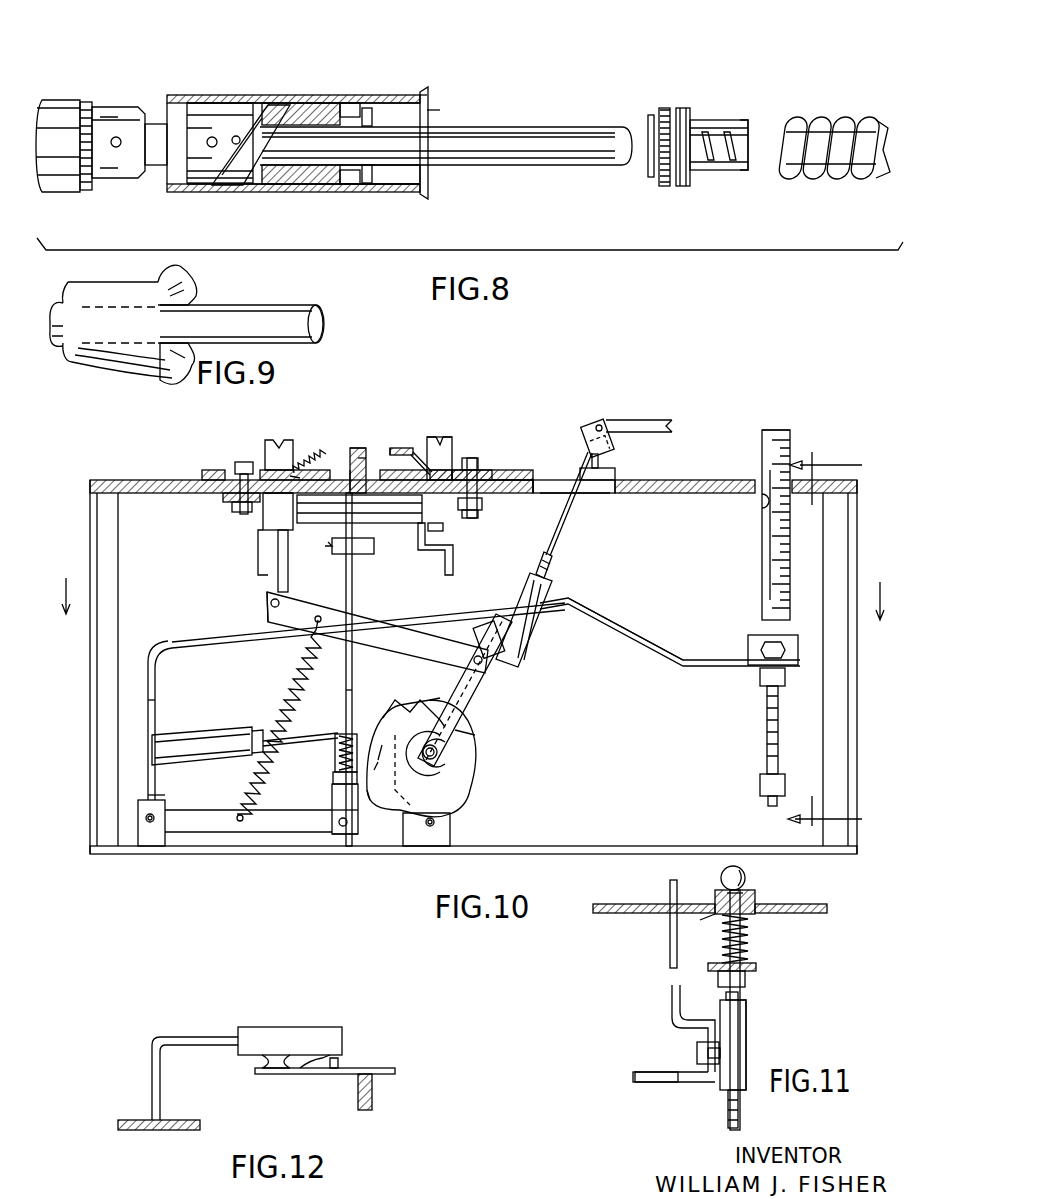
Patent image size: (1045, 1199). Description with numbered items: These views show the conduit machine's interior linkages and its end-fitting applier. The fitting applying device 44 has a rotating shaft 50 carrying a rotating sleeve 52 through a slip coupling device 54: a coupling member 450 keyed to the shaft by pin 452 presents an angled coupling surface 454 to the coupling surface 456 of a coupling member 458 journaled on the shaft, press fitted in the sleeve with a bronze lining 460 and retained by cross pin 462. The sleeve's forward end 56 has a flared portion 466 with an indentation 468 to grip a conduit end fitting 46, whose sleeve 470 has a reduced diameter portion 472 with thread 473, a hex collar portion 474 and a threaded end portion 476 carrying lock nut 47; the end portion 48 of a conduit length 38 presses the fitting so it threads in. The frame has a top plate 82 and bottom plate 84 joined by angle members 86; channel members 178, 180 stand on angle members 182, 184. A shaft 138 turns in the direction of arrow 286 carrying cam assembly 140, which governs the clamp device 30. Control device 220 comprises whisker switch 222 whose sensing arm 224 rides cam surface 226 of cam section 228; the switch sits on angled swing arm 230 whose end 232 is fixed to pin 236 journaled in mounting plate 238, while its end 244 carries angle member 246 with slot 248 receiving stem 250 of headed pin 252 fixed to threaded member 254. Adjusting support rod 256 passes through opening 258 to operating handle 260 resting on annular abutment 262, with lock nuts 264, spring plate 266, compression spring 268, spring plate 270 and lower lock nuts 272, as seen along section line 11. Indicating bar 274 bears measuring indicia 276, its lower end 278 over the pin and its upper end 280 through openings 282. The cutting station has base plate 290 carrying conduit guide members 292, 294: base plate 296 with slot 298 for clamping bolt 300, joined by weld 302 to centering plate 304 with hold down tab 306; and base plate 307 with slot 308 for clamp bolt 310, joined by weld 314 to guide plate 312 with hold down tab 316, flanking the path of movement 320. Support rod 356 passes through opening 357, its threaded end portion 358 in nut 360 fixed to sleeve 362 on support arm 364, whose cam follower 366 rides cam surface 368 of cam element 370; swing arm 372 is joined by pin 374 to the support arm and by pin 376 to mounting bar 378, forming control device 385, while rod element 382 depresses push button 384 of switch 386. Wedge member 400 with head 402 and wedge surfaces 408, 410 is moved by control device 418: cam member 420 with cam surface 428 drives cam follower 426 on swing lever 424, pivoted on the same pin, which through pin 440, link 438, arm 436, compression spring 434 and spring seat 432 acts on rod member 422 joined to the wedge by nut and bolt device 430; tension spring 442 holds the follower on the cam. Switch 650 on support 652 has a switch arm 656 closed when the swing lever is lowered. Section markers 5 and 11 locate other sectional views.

In FIG. 10, the clamp device 30 is at (362, 440).
In FIG. 8, the conduit length 38 is at (878, 178).
In FIG. 8, the power actuated fitting applying device 44 is at (468, 84).
In FIG. 8, the conduit end fitting 46 is at (745, 92).
In FIG. 8, the lock nut 47 is at (675, 92).
In FIG. 8, the end portion of conduit length 48 is at (810, 120).
In FIG. 8, the rotating shaft 50 is at (582, 132).
In FIG. 9, the rotating shaft 50 is at (290, 306).
In FIG. 8, the rotating sleeve 52 is at (352, 96).
In FIG. 8, the slip coupling device 54 is at (266, 100).
In FIG. 8, the flared end of sleeve 56 is at (432, 84).
In FIG. 10, the top plate 82 is at (705, 482).
In FIG. 11, the top plate 82 is at (820, 912).
In FIG. 10, the bottom plate 84 is at (580, 846).
In FIG. 12, the bottom plate 84 is at (185, 1122).
In FIG. 10, the angle members 86 is at (110, 600).
In FIG. 10, the shaft 138 is at (438, 750).
In FIG. 10, the cam assembly 140 is at (485, 740).
In FIG. 10, the channel member 178 is at (462, 470).
In FIG. 10, the channel member 180 is at (272, 442).
In FIG. 10, the angle member 182 is at (450, 560).
In FIG. 10, the angle member 184 is at (262, 572).
In FIG. 10, the control device 220 is at (140, 712).
In FIG. 10, the whisker switch 222 is at (206, 740).
In FIG. 10, the sensing arm 224 is at (322, 735).
In FIG. 10, the cam surface 226 is at (445, 756).
In FIG. 10, the cam section 228 is at (445, 780).
In FIG. 10, the angled swing arm 230 is at (135, 668).
In FIG. 11, the angled swing arm 230 is at (638, 1082).
In FIG. 10, the end of swing arm 232 is at (165, 800).
In FIG. 10, the pin 236 is at (150, 830).
In FIG. 10, the mounting plate 238 is at (158, 830).
In FIG. 10, the end of arm 244 is at (790, 665).
In FIG. 10, the angle member 246 is at (750, 645).
In FIG. 11, the angle member 246 is at (690, 1082).
In FIG. 10, the slot 248 is at (790, 652).
In FIG. 11, the stem 250 is at (740, 1040).
In FIG. 11, the headed pin 252 is at (697, 1055).
In FIG. 11, the hex shaped threaded member 254 is at (750, 1050).
In FIG. 11, the adjusting support rod 256 is at (738, 1118).
In FIG. 11, the opening 258 is at (760, 905).
In FIG. 11, the operating handle 260 is at (745, 880).
In FIG. 11, the annular abutment 262 is at (722, 890).
In FIG. 11, the lock nuts 264 is at (745, 976).
In FIG. 11, the spring plate 266 is at (757, 966).
In FIG. 11, the compression spring 268 is at (745, 940).
In FIG. 11, the spring plate 270 is at (715, 916).
In FIG. 10, the lock nuts 272 is at (760, 786).
In FIG. 10, the indicating bar 274 is at (780, 590).
In FIG. 11, the indicating bar 274 is at (668, 955).
In FIG. 10, the measuring indicia 276 is at (795, 420).
In FIG. 11, the lower end of indicating bar 278 is at (672, 1025).
In FIG. 10, the upper end of indicating bar 280 is at (770, 430).
In FIG. 10, the openings 282 is at (760, 510).
In FIG. 10, the arrow 286 is at (390, 790).
In FIG. 10, the base plate 290 is at (520, 480).
In FIG. 10, the conduit guide member 292 is at (450, 438).
In FIG. 10, the conduit guide member 294 is at (270, 468).
In FIG. 10, the base plate 296 is at (594, 424).
In FIG. 10, the slot 298 is at (488, 472).
In FIG. 10, the clamping bolt 300 is at (488, 495).
In FIG. 10, the weld 302 is at (448, 466).
In FIG. 10, the centering plate 304 is at (440, 445).
In FIG. 10, the hold down tab 306 is at (405, 448).
In FIG. 10, the base plate 307 is at (202, 472).
In FIG. 10, the slot 308 is at (232, 492).
In FIG. 10, the clamp bolt 310 is at (238, 505).
In FIG. 10, the guide plate 312 is at (310, 455).
In FIG. 10, the weld 314 is at (275, 495).
In FIG. 10, the hold down tab 316 is at (345, 455).
In FIG. 10, the path of movement 320 is at (400, 523).
In FIG. 10, the support rod 356 is at (560, 540).
In FIG. 10, the opening 357 is at (600, 494).
In FIG. 10, the threaded end portion 358 is at (550, 570).
In FIG. 10, the nut 360 is at (560, 605).
In FIG. 10, the sleeve 362 is at (530, 640).
In FIG. 10, the support arm 364 is at (462, 692).
In FIG. 10, the cam follower 366 is at (455, 725).
In FIG. 10, the cam surface 368 is at (470, 765).
In FIG. 10, the cam element 370 is at (470, 738).
In FIG. 10, the swing arm 372 is at (415, 640).
In FIG. 10, the pin 374 is at (480, 632).
In FIG. 10, the pin 376 is at (265, 605).
In FIG. 10, the mounting bar 378 is at (280, 580).
In FIG. 10, the rod element 382 is at (615, 425).
In FIG. 10, the push button 384 is at (604, 462).
In FIG. 10, the control device 385 is at (610, 418).
In FIG. 10, the switch 386 is at (615, 474).
In FIG. 10, the wedge member 400 is at (353, 540).
In FIG. 10, the head 402 is at (365, 438).
In FIG. 10, the wedge surface 408 is at (388, 474).
In FIG. 10, the wedge surface 410 is at (360, 462).
In FIG. 10, the control device 418 is at (410, 846).
In FIG. 10, the cam member 420 is at (445, 800).
In FIG. 10, the rod member 422 is at (348, 705).
In FIG. 10, the swing lever 424 is at (290, 832).
In FIG. 12, the swing lever 424 is at (372, 1095).
In FIG. 10, the cam follower 426 is at (440, 830).
In FIG. 10, the cam surface 428 is at (440, 822).
In FIG. 10, the nut and bolt device 430 is at (328, 540).
In FIG. 10, the spring seat 432 is at (335, 794).
In FIG. 10, the compression spring 434 is at (333, 774).
In FIG. 10, the arm 436 is at (335, 745).
In FIG. 10, the link 438 is at (335, 820).
In FIG. 10, the pin 440 is at (335, 838).
In FIG. 10, the tension spring 442 is at (252, 770).
In FIG. 8, the coupling member 450 is at (213, 110).
In FIG. 8, the pin 452 is at (214, 138).
In FIG. 8, the coupling surface 454 is at (212, 184).
In FIG. 8, the coupling surface 456 is at (240, 160).
In FIG. 8, the coupling member 458 is at (320, 185).
In FIG. 8, the bronze lining 460 is at (325, 188).
In FIG. 8, the cross pin 462 is at (372, 176).
In FIG. 8, the flared portion 466 is at (422, 92).
In FIG. 9, the flared portion 466 is at (195, 270).
In FIG. 9, the indentation 468 is at (168, 272).
In FIG. 8, the sleeve 470 is at (698, 118).
In FIG. 8, the reduced diameter portion 472 is at (750, 118).
In FIG. 8, the thread 473 is at (728, 172).
In FIG. 8, the collar portion 474 is at (676, 186).
In FIG. 8, the threaded end portion 476 is at (648, 170).
In FIG. 10, the section line 5 is at (473, 590).
In FIG. 10, the section line 11 is at (835, 642).
In FIG. 12, the switch 650 is at (278, 1035).
In FIG. 12, the support 652 is at (162, 1078).
In FIG. 12, the switch arm 656 is at (355, 1068).